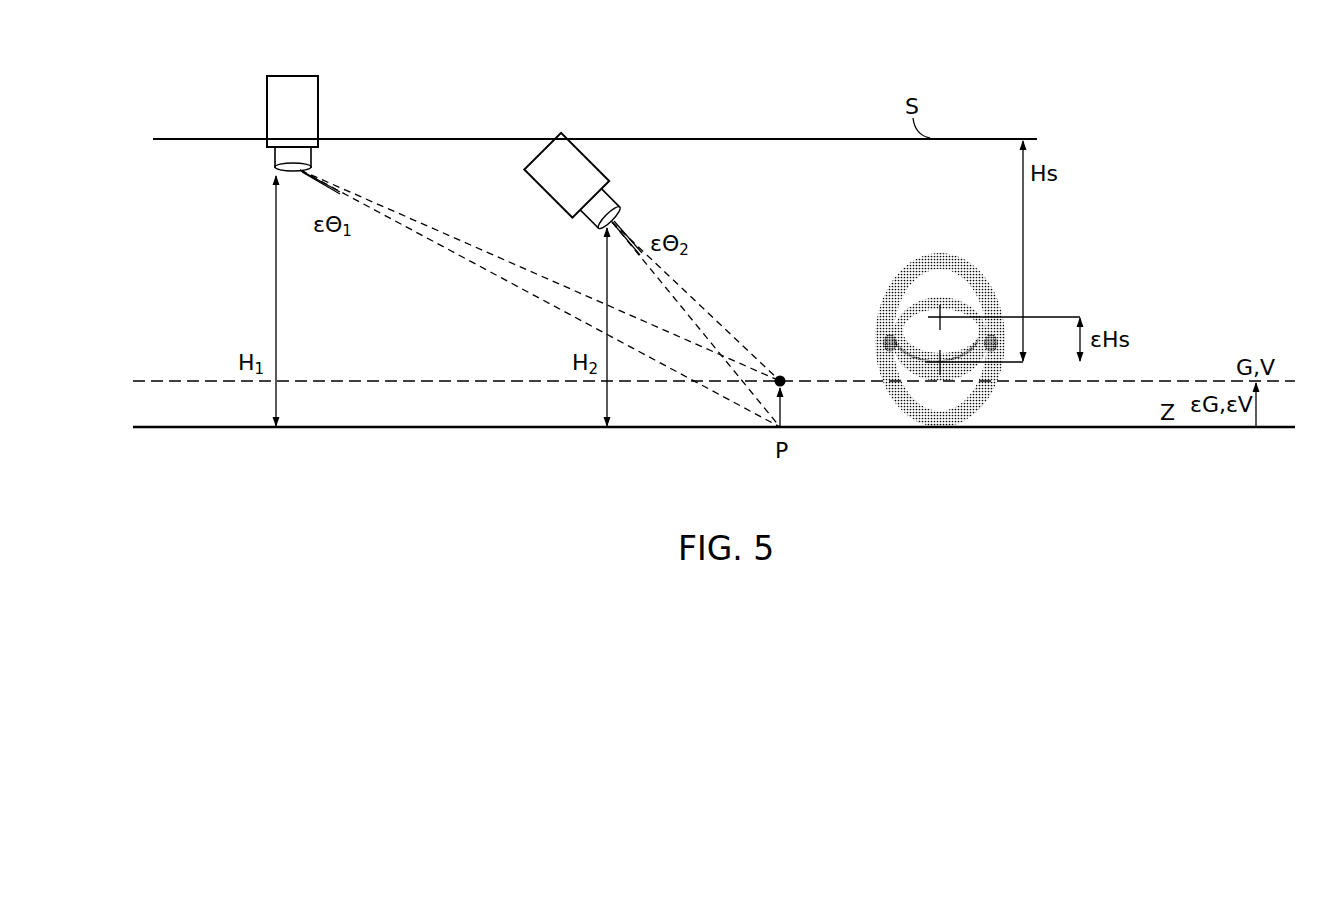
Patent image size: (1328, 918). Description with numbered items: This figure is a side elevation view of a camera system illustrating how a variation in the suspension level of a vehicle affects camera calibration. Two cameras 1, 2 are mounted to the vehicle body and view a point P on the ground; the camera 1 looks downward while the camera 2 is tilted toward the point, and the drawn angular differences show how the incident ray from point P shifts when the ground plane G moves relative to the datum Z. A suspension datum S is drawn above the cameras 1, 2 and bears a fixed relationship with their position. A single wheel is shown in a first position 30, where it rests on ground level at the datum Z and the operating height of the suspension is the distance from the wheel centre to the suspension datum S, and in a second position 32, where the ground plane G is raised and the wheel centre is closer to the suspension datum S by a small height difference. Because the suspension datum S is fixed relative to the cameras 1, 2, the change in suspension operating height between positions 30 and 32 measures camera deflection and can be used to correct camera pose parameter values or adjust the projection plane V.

The camera 1 is at (523, 237).
The camera 2 is at (652, 280).
The first position 30 is at (990, 405).
The second position 32 is at (940, 253).